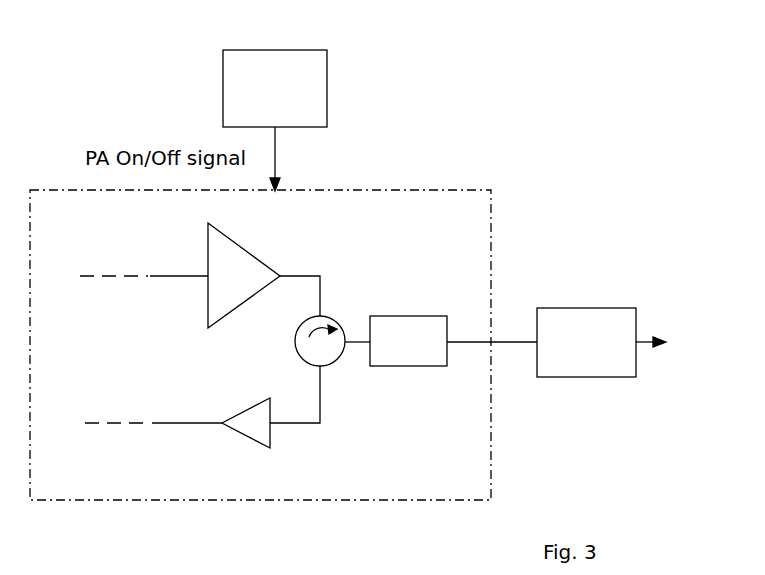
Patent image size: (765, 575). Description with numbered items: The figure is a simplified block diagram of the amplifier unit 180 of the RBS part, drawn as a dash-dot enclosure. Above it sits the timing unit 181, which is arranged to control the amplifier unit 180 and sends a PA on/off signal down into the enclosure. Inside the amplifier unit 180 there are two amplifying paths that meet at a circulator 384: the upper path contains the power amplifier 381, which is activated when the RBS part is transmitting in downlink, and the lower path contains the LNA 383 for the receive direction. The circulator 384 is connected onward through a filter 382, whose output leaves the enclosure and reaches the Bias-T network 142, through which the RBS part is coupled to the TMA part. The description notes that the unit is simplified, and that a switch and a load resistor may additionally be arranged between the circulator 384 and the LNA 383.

The amplifier unit 180 is at (358, 190).
The timing unit 181 is at (278, 50).
The power amplifier 381 is at (208, 305).
The filter 382 is at (383, 316).
The LNA 383 is at (272, 438).
The circulator 384 is at (338, 362).
The Bias-T network 142 is at (562, 308).